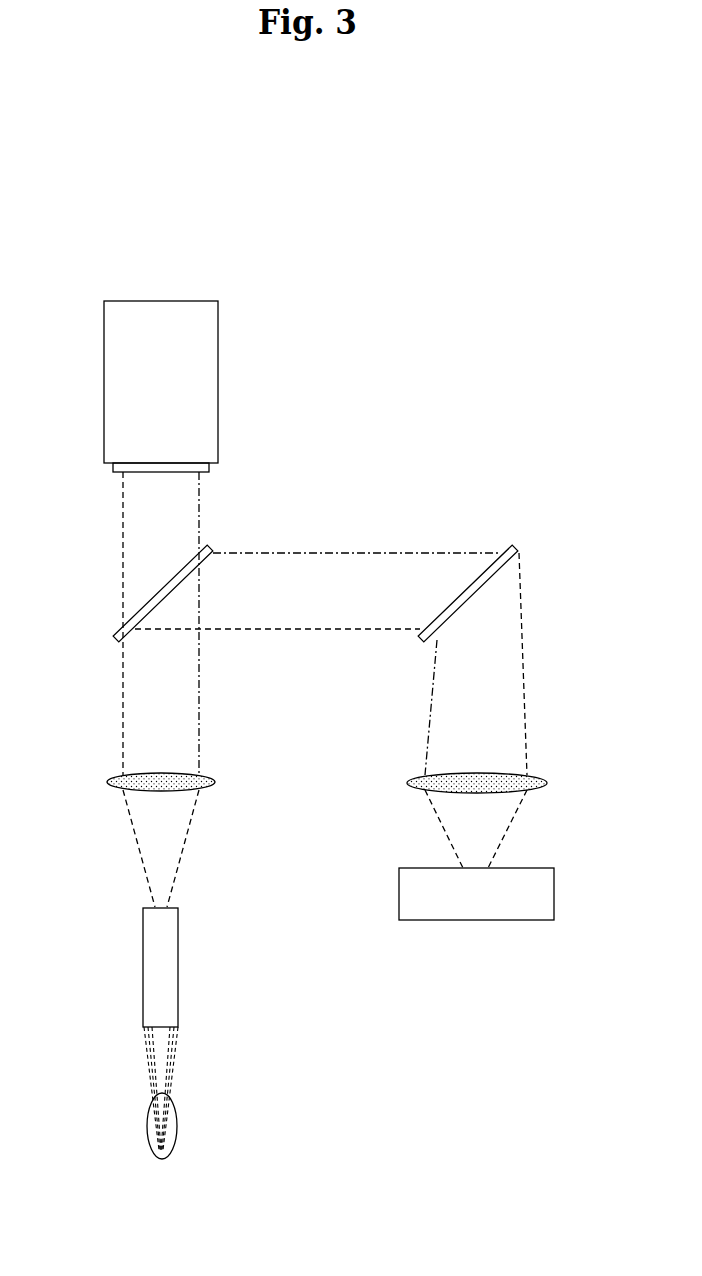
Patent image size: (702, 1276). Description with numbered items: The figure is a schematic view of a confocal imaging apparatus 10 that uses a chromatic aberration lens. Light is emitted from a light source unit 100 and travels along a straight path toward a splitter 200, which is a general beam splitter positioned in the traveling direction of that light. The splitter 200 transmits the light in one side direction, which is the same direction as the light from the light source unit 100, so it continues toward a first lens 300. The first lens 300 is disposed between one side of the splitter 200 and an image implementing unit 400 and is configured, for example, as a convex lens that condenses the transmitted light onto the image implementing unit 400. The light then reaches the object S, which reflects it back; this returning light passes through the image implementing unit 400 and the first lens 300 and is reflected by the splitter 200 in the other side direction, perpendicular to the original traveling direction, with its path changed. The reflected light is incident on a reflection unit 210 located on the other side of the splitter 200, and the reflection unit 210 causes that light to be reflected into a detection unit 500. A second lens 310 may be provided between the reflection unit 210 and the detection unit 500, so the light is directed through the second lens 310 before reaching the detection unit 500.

The confocal imaging apparatus 10 is at (517, 316).
The light source unit 100 is at (110, 392).
The splitter 200 is at (153, 598).
The reflection unit 210 is at (478, 583).
The first lens 300 is at (108, 782).
The second lens 310 is at (539, 779).
The image implementing unit 400 is at (148, 970).
The detection unit 500 is at (460, 921).
The object S is at (147, 1130).